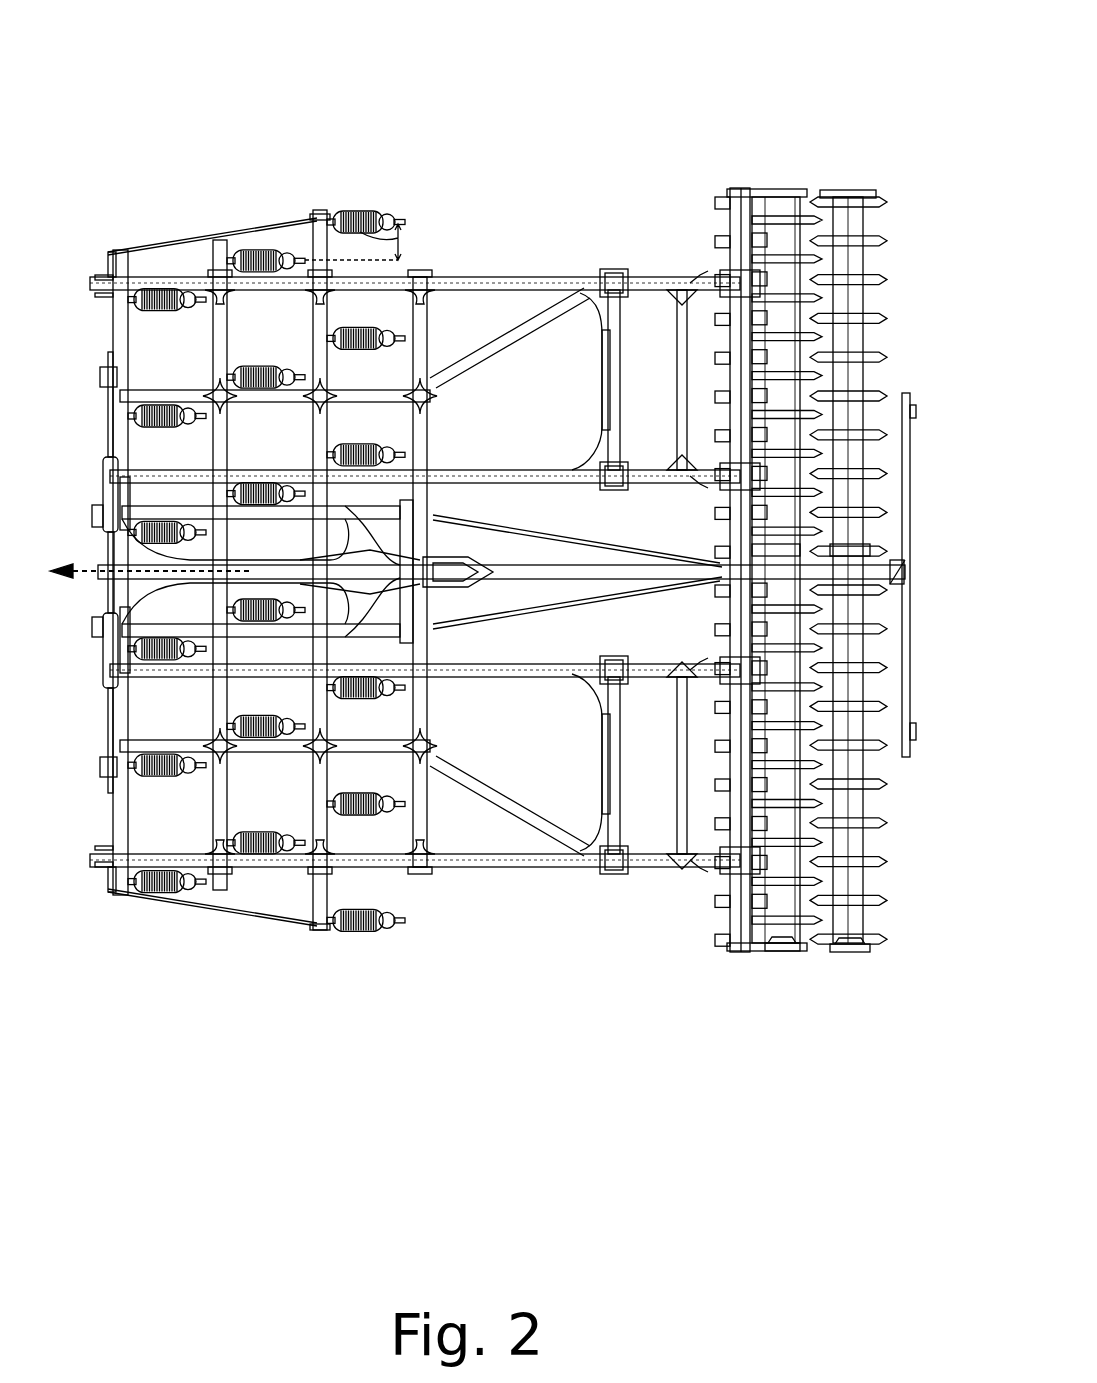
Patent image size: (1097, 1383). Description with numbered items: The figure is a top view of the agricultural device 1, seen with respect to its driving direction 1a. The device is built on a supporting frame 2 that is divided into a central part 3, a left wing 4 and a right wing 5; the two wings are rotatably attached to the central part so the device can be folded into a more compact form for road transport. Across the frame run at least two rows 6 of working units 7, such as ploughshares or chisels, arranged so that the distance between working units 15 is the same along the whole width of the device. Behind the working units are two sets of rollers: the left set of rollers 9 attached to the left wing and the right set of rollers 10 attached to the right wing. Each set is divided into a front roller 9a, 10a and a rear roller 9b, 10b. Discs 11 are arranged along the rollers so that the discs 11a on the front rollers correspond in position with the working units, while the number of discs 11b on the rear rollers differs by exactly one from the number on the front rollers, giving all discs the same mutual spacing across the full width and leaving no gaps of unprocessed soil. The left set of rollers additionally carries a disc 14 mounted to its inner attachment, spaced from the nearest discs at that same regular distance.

The agricultural device 1 is at (213, 170).
The driving direction 1a is at (82, 560).
The supporting frame 2 is at (620, 567).
The central part 3 is at (185, 578).
The left wing 4 is at (486, 866).
The right wing 5 is at (418, 290).
The row of working units 6 is at (148, 918).
The working unit 7 is at (347, 928).
The left set of rollers 9 is at (758, 940).
The front roller of left set 9a is at (782, 943).
The rear roller of left set 9b is at (845, 927).
The right set of rollers 10 is at (758, 202).
The front roller of right set 10a is at (788, 205).
The rear roller of right set 10b is at (848, 217).
The disc 11 is at (877, 940).
The disc on front roller 11a is at (758, 915).
The disc on rear roller 11b is at (877, 200).
The disc mounted to inner attachment 14 is at (863, 553).
The distance between working units 15 is at (347, 217).